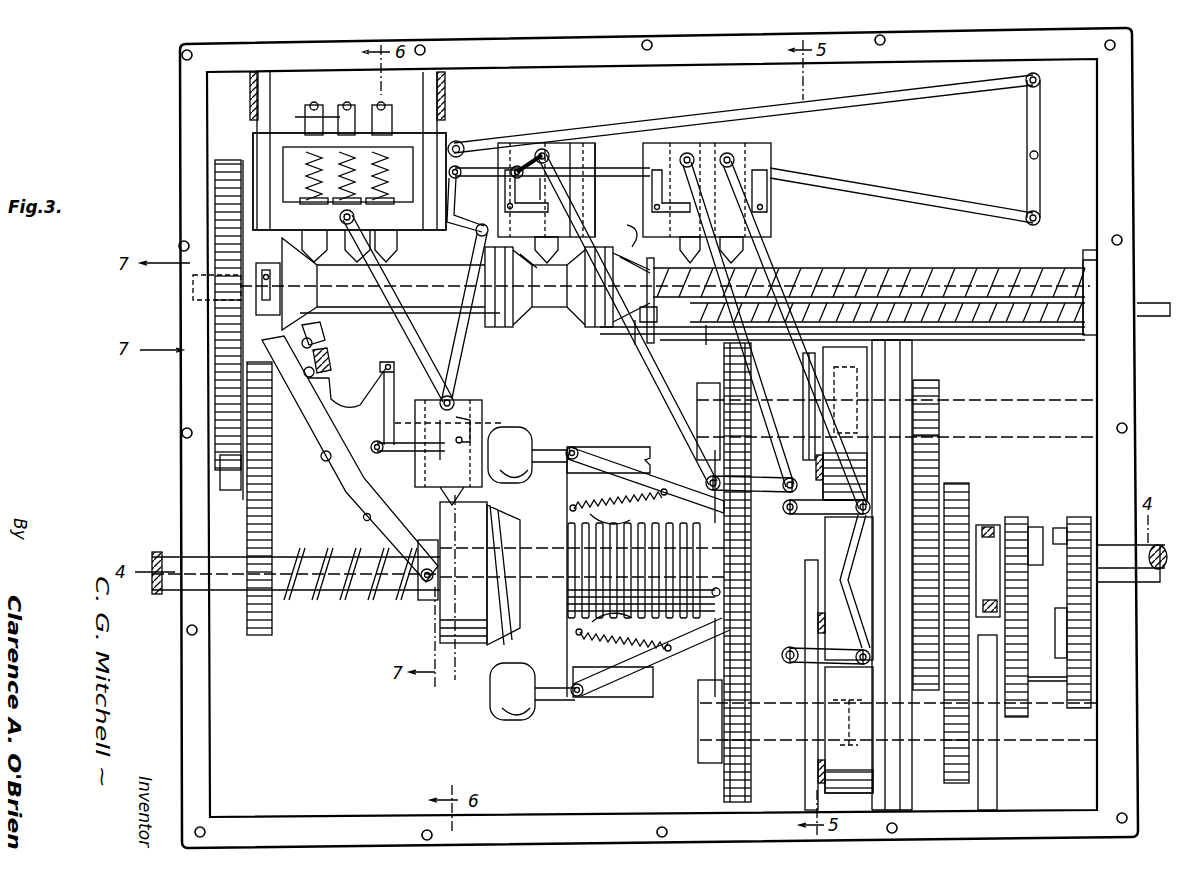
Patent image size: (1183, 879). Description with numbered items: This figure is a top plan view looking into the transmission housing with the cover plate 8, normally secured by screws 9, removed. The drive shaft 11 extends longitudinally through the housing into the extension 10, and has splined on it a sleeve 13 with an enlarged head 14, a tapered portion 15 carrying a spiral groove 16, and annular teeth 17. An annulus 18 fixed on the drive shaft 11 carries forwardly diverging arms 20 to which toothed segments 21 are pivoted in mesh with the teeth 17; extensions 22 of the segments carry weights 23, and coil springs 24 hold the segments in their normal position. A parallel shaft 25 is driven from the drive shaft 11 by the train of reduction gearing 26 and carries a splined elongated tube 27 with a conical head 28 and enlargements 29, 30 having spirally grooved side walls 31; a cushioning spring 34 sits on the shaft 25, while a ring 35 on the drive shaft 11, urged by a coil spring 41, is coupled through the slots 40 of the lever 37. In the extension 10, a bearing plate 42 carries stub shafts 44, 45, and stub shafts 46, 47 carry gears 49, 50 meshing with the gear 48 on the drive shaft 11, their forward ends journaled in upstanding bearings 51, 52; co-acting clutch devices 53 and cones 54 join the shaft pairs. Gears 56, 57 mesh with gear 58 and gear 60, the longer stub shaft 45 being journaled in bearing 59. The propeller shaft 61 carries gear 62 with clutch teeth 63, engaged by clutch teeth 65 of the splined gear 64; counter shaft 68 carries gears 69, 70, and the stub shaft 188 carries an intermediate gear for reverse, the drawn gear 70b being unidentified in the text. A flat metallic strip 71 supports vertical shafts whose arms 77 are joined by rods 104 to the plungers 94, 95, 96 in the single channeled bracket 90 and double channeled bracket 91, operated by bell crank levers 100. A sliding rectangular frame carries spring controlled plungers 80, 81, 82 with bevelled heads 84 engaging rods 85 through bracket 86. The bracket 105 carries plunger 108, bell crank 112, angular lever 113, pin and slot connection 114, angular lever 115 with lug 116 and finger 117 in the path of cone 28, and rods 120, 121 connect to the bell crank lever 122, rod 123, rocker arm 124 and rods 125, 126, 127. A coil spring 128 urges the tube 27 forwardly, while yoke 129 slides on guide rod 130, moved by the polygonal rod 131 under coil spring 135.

The cover plate 8 is at (447, 422).
The screws 9 is at (688, 143).
The extension 10 is at (262, 152).
The drive shaft 11 is at (238, 600).
The sleeve 13 is at (518, 522).
The enlarged head 14 is at (482, 645).
The tapered portion 15 is at (512, 622).
The spiral groove 16 is at (486, 578).
The annular teeth 17 is at (568, 565).
The annulus 18 is at (752, 600).
The forwardly diverging arms 20 is at (665, 492).
The toothed segments 21 is at (600, 447).
The extensions 22 is at (560, 450).
The weights 23 is at (522, 437).
The coil springs 24 is at (580, 505).
The shaft 25 is at (880, 268).
The train of reduction gearing 26 is at (236, 484).
The elongated tube 27 is at (665, 289).
The conical head 28 is at (285, 250).
The enlargement 29 is at (498, 330).
The enlargement 30 is at (582, 330).
The spirally grooved side walls 31 is at (545, 312).
The cushioning spring 34 is at (258, 290).
The ring 35 is at (420, 605).
The lever 37 is at (335, 488).
The slots 40 is at (360, 520).
The coil spring 41 is at (345, 605).
The bearing plate 42 is at (907, 360).
The stub shaft 44 is at (848, 400).
The stub shaft 45 is at (849, 712).
The stub shaft 46 is at (880, 350).
The stub shaft 47 is at (843, 678).
The gear 48 is at (752, 582).
The gear 49 is at (698, 385).
The gear 50 is at (722, 778).
The upstanding bearing 51 is at (698, 420).
The upstanding bearing 52 is at (700, 722).
The clutch devices 53 is at (872, 355).
The clutch cones 54 is at (803, 370).
The large gear 56 is at (930, 482).
The small gear 57 is at (965, 500).
The gear 58 is at (940, 388).
The bearing 59 is at (995, 768).
The gear 60 is at (948, 785).
The propeller shaft 61 is at (1158, 545).
The gear 62 is at (1078, 517).
The clutch teeth 63 is at (1058, 528).
The gear 64 is at (1014, 520).
The clutch teeth 65 is at (1038, 530).
The counter shaft 68 is at (1058, 680).
The gear 69 is at (1078, 710).
The gear 70 is at (430, 133).
The gear 70b is at (1010, 720).
The flat metallic strip 71 is at (775, 563).
The arm 77 is at (780, 678).
The spring controlled plunger 80 is at (312, 230).
The spring controlled plunger 81 is at (345, 230).
The spring controlled plunger 82 is at (385, 232).
The bevelled heads 84 is at (332, 119).
The rods 85 is at (378, 103).
The bracket 86 is at (445, 92).
The single channeled bracket 90 is at (588, 147).
The double channeled bracket 91 is at (756, 152).
The plunger 94 is at (546, 203).
The plunger 95 is at (689, 236).
The plunger 96 is at (755, 238).
The bell crank levers 100 is at (505, 196).
The rods 104 is at (750, 243).
The bracket 105 is at (415, 478).
The plunger 108 is at (445, 495).
The bell crank 112 is at (470, 418).
The angular lever 113 is at (395, 455).
The pin and slot connection 114 is at (388, 390).
The angular lever 115 is at (347, 382).
The lug 116 is at (341, 353).
The finger 117 is at (324, 330).
The rod 120 is at (395, 272).
The rod 121 is at (425, 358).
The bell crank lever 122 is at (415, 262).
The rod 123 is at (850, 103).
The rocker arm 124 is at (1025, 127).
The rod 125 is at (878, 190).
The rod 126 is at (600, 170).
The rod 127 is at (498, 150).
The coil spring 128 is at (950, 266).
The yoke 129 is at (620, 231).
The guide rod 130 is at (1036, 336).
The polygonal rod 131 is at (1008, 336).
The coil spring 135 is at (1066, 336).
The stub shaft 188 is at (1056, 632).